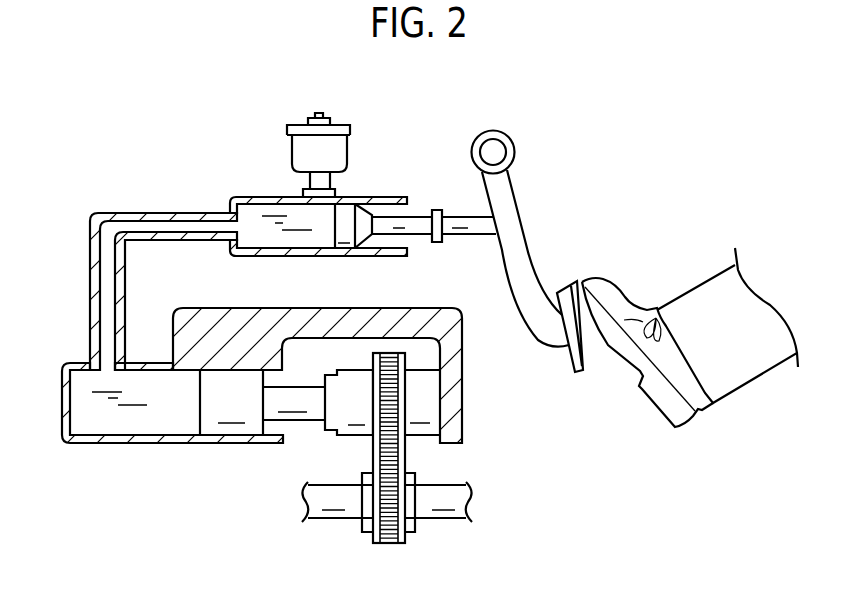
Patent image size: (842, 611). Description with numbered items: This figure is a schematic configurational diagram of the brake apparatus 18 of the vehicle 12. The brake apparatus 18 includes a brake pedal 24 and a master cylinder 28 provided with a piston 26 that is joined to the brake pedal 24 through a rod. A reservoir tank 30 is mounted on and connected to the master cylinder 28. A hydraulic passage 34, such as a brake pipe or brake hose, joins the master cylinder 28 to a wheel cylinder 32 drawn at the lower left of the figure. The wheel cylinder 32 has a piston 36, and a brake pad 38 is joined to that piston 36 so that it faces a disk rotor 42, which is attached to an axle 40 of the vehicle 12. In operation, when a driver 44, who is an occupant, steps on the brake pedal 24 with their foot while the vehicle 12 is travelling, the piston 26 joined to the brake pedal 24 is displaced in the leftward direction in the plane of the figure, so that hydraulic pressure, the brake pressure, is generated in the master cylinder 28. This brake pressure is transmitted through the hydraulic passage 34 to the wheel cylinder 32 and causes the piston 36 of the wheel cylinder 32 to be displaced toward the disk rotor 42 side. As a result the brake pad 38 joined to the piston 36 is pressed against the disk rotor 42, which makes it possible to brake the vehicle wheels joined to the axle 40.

The vehicle 12 is at (258, 335).
The brake apparatus 18 is at (136, 140).
The brake pedal 24 is at (546, 320).
The piston 26 is at (343, 212).
The master cylinder 28 is at (276, 195).
The reservoir tank 30 is at (333, 151).
The wheel cylinder 32 is at (107, 442).
The hydraulic passage 34 is at (90, 283).
The piston 36 is at (214, 418).
The brake pad 38 is at (347, 437).
The axle 40 is at (444, 520).
The disk rotor 42 is at (398, 463).
The driver 44 is at (691, 288).